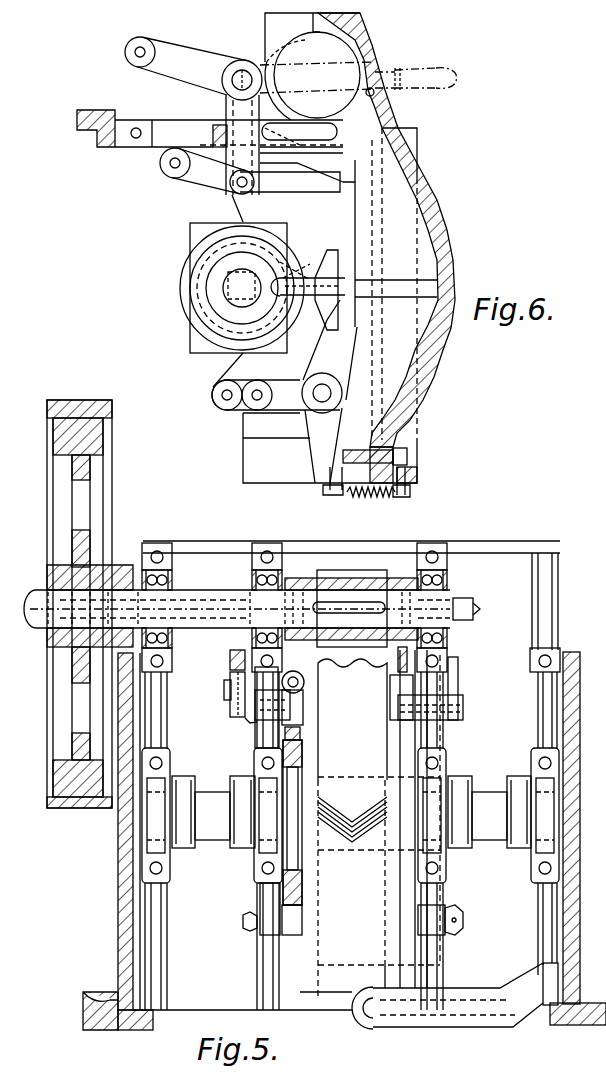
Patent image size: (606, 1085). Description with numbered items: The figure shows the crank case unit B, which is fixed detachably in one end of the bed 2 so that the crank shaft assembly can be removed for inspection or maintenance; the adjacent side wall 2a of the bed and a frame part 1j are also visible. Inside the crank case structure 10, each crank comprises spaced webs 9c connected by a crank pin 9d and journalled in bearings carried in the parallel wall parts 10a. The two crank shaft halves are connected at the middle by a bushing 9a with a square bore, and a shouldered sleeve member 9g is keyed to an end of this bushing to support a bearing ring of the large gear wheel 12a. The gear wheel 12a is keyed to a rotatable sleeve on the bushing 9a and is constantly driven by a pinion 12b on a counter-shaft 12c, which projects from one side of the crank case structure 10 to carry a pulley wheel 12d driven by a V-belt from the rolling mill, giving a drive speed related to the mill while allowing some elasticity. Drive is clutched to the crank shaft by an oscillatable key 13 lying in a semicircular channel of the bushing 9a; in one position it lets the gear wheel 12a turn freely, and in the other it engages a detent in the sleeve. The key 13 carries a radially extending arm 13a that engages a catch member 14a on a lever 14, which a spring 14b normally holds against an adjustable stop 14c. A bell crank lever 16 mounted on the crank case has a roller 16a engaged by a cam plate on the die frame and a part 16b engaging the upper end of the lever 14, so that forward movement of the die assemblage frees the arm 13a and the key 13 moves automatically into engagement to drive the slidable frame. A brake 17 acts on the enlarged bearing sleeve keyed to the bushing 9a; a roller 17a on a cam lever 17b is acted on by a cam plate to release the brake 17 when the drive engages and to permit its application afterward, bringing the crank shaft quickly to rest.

In FIG. 6, the bell crank lever 16 is at (199, 62).
In FIG. 5, the bell crank lever 16 is at (453, 678).
In FIG. 6, the roller 16a is at (127, 63).
In FIG. 6, the part of bell crank lever 16b is at (288, 187).
In FIG. 5, the part of bell crank lever 16b is at (395, 688).
In FIG. 5, the brake 17 is at (295, 883).
In FIG. 6, the roller 17a is at (160, 172).
In FIG. 5, the roller 17a is at (232, 700).
In FIG. 6, the cam lever 17b is at (197, 180).
In FIG. 5, the cam lever 17b is at (250, 723).
In FIG. 6, the shaft 1j is at (353, 150).
In FIG. 5, the shaft 1j is at (230, 647).
In FIG. 6, the lever 14 is at (353, 230).
In FIG. 5, the lever 14 is at (410, 953).
In FIG. 6, the catch member 14a is at (324, 256).
In FIG. 6, the spring 14b is at (357, 495).
In FIG. 6, the stop 14c is at (343, 452).
In FIG. 6, the bushing 9a is at (218, 300).
In FIG. 6, the sleeve member 9g is at (193, 289).
In FIG. 5, the webs 9c is at (237, 780).
In FIG. 5, the crank pin 9d is at (212, 828).
In FIG. 6, the oscillatable key 13 is at (277, 300).
In FIG. 6, the radially extending arm 13a is at (312, 317).
In FIG. 5, the large gear wheel 12a is at (379, 827).
In FIG. 5, the pinion 12b is at (350, 570).
In FIG. 5, the counter-shaft 12c is at (40, 627).
In FIG. 5, the pulley wheel 12d is at (73, 462).
In FIG. 5, the crank case structure 10 is at (247, 1002).
In FIG. 5, the wall parts 10a is at (263, 898).
In FIG. 5, the bed 2 is at (85, 1017).
In FIG. 5, the side wall 2a is at (118, 915).
In FIG. 5, the crank case unit B is at (175, 1017).